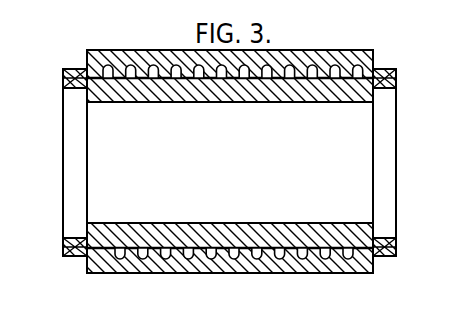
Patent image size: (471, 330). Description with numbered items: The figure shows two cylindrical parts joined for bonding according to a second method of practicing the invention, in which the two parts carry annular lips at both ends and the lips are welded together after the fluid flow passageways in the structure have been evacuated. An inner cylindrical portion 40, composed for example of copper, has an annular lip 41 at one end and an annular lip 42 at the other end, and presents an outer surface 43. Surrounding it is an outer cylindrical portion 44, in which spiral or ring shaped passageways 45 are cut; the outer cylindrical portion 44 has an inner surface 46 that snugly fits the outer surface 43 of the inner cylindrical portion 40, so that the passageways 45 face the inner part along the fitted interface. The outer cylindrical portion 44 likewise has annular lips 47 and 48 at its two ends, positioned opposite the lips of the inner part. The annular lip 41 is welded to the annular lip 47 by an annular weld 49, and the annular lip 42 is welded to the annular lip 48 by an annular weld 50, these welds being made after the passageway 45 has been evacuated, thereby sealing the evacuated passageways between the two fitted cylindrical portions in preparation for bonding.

The inner cylindrical portion 40 is at (183, 224).
The annular lip 41 is at (62, 244).
The annular lip 42 is at (397, 246).
The outer surface 43 is at (270, 245).
The outer cylindrical portion 44 is at (117, 274).
The passageways 45 is at (188, 257).
The inner surface 46 is at (245, 258).
The annular lip 47 is at (78, 254).
The annular lip 48 is at (385, 257).
The annular weld 49 is at (62, 79).
The annular weld 50 is at (397, 80).